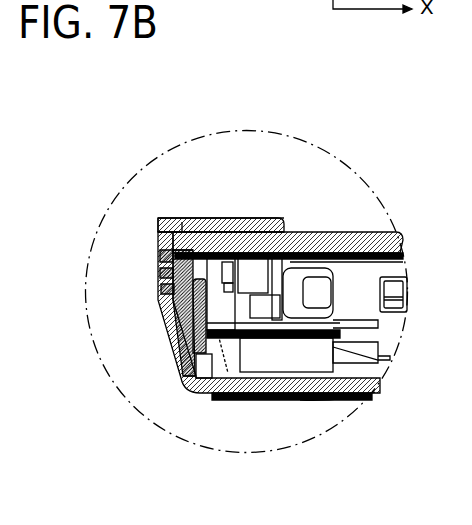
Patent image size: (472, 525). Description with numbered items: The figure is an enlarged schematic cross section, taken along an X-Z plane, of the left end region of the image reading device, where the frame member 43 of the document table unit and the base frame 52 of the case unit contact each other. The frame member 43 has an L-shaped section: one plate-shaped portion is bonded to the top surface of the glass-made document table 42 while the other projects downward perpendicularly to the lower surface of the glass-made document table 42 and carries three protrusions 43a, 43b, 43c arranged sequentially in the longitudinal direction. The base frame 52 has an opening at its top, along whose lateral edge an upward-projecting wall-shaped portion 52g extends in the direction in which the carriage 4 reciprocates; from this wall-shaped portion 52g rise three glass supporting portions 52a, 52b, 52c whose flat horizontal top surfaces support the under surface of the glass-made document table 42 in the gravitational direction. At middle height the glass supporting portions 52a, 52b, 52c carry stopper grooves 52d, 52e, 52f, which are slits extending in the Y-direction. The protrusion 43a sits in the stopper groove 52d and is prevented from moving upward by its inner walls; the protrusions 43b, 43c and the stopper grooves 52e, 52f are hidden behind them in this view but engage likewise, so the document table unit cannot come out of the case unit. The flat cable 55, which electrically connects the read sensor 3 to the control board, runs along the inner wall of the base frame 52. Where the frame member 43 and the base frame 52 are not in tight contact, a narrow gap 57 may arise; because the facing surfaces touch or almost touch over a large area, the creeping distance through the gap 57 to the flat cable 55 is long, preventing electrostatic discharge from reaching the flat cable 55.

The read sensor 3 is at (223, 218).
The carriage 4 is at (378, 328).
The glass-made document table 42 is at (363, 232).
The frame member 43 is at (243, 218).
The protrusion 43a is at (160, 270).
The protrusion 43b is at (95, 311).
The protrusion 43c is at (96, 333).
The base frame 52 is at (296, 397).
The glass supporting portion 52a is at (182, 222).
The glass supporting portion 52b is at (170, 169).
The glass supporting portion 52c is at (107, 184).
The stopper groove 52d is at (162, 255).
The stopper groove 52e is at (109, 229).
The stopper groove 52f is at (110, 304).
The wall-shaped portion 52g is at (160, 305).
The flat cable 55 is at (182, 360).
The gap 57 is at (160, 317).